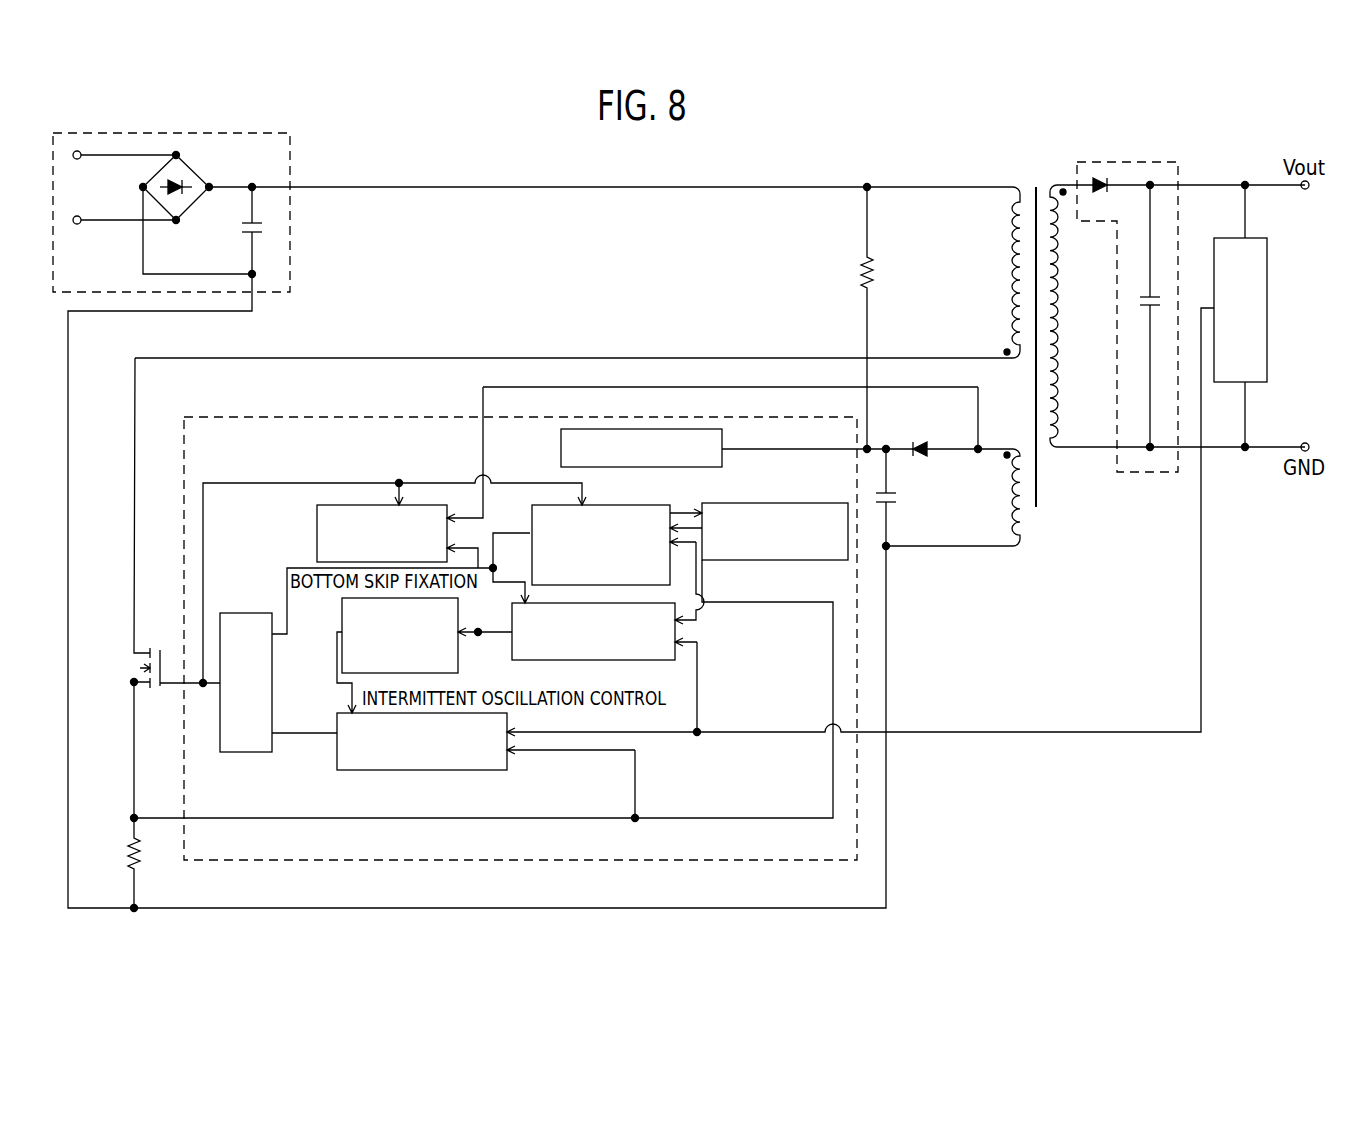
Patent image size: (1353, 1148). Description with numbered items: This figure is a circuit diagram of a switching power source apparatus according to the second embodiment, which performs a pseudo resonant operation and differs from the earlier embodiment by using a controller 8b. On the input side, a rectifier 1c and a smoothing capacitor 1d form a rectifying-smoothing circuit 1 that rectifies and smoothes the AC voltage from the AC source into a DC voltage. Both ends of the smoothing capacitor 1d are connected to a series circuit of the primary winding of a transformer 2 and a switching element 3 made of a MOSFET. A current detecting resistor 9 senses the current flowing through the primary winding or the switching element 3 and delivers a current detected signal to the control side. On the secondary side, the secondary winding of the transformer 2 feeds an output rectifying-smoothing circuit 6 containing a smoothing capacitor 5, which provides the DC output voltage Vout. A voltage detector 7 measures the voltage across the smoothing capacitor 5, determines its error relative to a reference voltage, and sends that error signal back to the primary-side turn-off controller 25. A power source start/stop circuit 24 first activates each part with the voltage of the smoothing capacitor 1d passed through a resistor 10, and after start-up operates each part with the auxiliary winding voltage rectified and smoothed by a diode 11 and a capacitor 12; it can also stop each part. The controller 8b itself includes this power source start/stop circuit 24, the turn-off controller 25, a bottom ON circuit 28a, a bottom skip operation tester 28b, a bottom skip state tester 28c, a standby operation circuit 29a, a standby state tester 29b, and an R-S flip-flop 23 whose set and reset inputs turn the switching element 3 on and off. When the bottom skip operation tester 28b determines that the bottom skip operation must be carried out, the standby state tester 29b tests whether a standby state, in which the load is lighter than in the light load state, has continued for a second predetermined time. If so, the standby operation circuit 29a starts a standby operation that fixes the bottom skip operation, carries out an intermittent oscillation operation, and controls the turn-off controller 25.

The rectifying-smoothing circuit 1 is at (291, 158).
The rectifier 1c is at (197, 170).
The smoothing capacitor 1d is at (240, 230).
The transformer 2 is at (1036, 182).
The switching element 3 is at (130, 670).
The smoothing capacitor 5 is at (1143, 300).
The output rectifying and smoothing circuit 6 is at (1179, 213).
The voltage detector 7 is at (1268, 272).
The controller 8b is at (806, 862).
The current detecting resistor 9 is at (145, 860).
The resistor 10 is at (877, 272).
The diode 11 is at (919, 459).
The capacitor 12 is at (894, 498).
The R-S flip-flop 23 is at (243, 612).
The power source start/stop circuit 24 is at (558, 449).
The turn-off controller 25 is at (445, 770).
The bottom ON circuit 28a is at (316, 516).
The bottom skip operation tester 28b is at (660, 502).
The bottom skip state tester 28c is at (757, 561).
The standby operation circuit 29a is at (462, 648).
The standby state tester 29b is at (680, 630).